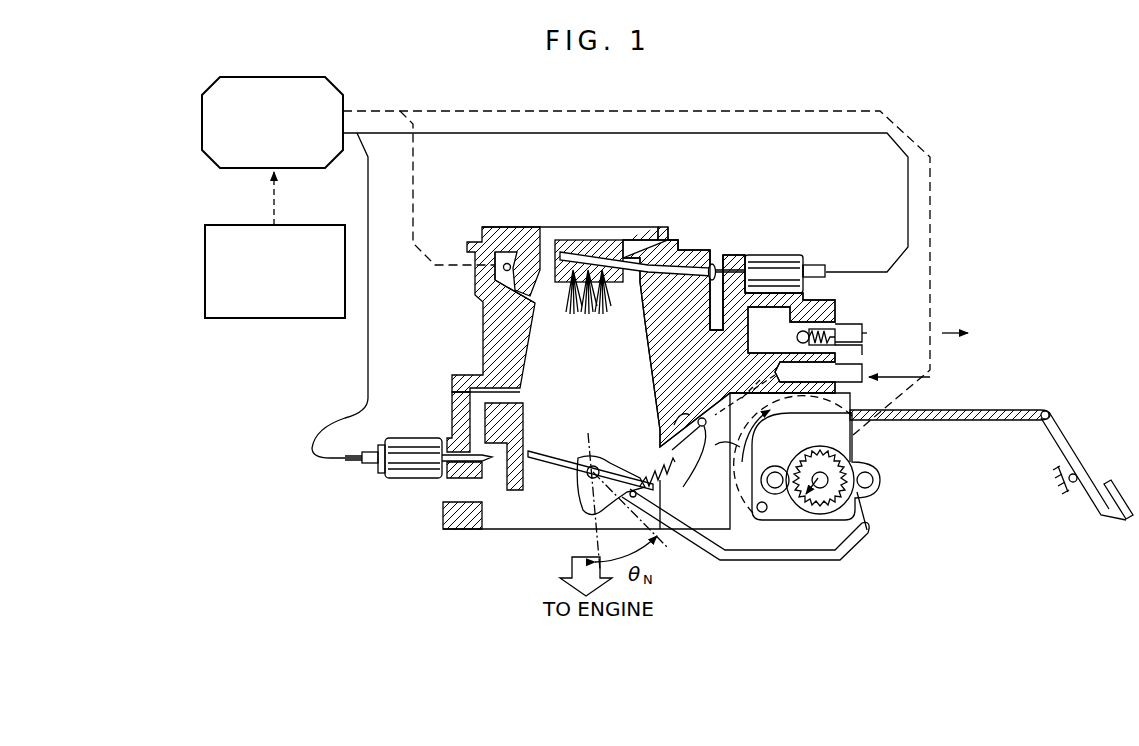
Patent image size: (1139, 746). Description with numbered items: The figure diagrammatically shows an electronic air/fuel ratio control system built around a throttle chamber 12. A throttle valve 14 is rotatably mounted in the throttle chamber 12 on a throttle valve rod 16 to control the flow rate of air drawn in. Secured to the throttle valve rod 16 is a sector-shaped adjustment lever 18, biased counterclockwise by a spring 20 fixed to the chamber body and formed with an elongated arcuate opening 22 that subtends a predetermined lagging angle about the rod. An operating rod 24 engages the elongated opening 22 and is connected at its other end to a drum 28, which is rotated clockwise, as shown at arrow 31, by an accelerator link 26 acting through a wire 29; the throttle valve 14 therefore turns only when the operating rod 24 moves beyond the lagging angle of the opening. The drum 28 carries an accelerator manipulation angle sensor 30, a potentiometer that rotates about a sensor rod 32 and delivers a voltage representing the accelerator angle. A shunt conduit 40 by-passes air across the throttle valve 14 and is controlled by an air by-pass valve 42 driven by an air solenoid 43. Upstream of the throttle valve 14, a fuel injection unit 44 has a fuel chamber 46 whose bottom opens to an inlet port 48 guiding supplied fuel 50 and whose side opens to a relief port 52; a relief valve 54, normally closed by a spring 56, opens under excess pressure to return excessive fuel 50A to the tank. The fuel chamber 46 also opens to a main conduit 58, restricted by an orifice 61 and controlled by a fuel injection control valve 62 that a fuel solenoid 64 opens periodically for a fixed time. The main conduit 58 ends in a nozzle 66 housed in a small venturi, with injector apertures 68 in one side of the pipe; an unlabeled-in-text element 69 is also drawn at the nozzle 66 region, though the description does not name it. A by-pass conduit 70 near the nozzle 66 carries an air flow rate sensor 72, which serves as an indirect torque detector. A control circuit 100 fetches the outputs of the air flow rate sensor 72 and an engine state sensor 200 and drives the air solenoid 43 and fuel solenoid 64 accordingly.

The control circuit 100 is at (202, 141).
The engine state sensor 200 is at (222, 320).
The throttle chamber 12 is at (483, 352).
The throttle valve 14 is at (587, 463).
The throttle valve rod 16 is at (583, 477).
The adjustment lever 18 is at (573, 513).
The spring 20 is at (668, 463).
The elongated arcuate opening 22 is at (622, 515).
The operating rod 24 is at (752, 562).
The accelerator link 26 is at (1078, 488).
The drum 28 is at (845, 428).
The wire 29 is at (963, 421).
The accelerator manipulation angle sensor 30 is at (868, 497).
The arrow 31 is at (720, 452).
The sensor rod 32 is at (820, 489).
The shunt conduit 40 is at (483, 412).
The air by-pass valve 42 is at (481, 522).
The air solenoid 43 is at (410, 467).
The fuel injection unit 44 is at (800, 256).
The fuel chamber 46 is at (795, 305).
The inlet port 48 is at (857, 383).
The supplied fuel 50 is at (945, 378).
The excessive fuel 50A is at (943, 336).
The relief port 52 is at (852, 357).
The relief valve 54 is at (830, 326).
The spring 56 is at (862, 332).
The main conduit 58 is at (683, 265).
The orifice 61 is at (730, 320).
The fuel injection control valve 62 is at (717, 292).
The fuel solenoid 64 is at (780, 258).
The nozzle 66 is at (608, 258).
The injector apertures 68 is at (585, 314).
The metering rod 69 is at (585, 255).
The by-pass conduit 70 is at (483, 313).
The air flow rate sensor 72 is at (507, 262).